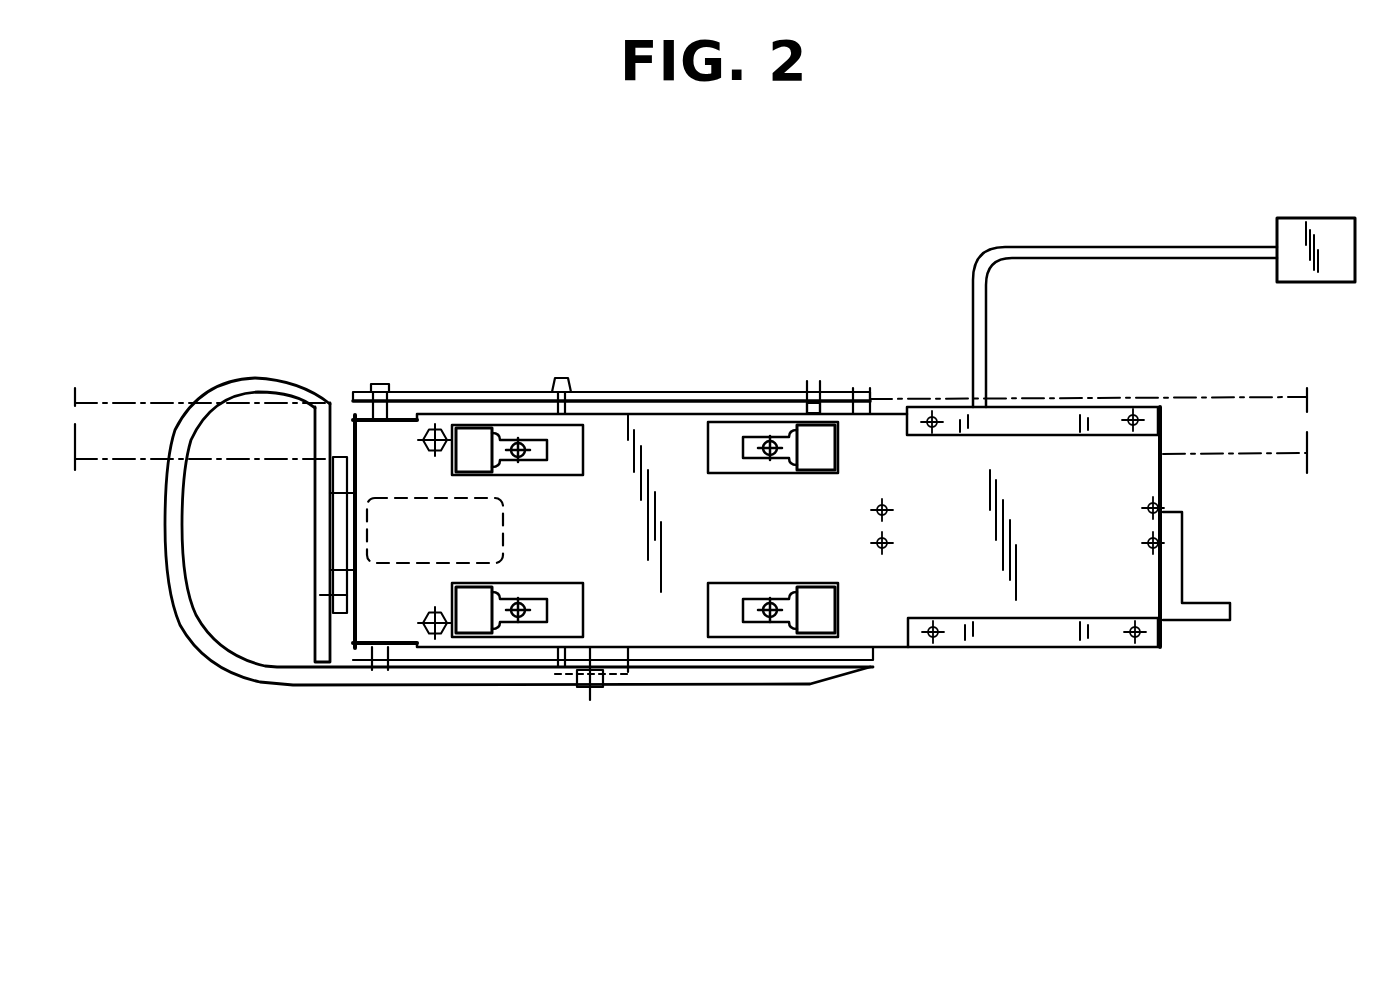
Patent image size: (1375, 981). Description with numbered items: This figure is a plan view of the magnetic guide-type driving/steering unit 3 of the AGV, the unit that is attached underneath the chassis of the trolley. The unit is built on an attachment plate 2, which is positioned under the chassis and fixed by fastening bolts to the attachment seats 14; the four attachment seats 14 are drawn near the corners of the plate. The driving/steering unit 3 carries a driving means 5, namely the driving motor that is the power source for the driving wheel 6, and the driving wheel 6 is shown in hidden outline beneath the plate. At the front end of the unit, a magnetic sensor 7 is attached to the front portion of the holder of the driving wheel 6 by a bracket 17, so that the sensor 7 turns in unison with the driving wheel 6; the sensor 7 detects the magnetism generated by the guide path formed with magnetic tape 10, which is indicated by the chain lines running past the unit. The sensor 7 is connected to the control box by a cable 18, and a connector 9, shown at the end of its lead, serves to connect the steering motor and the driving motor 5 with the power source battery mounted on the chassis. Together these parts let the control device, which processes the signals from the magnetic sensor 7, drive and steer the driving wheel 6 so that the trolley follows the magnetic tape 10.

The attachment plate 2 is at (791, 578).
The driving/steering unit 3 is at (715, 465).
The driving means 5 is at (613, 596).
The driving wheel 6 is at (435, 637).
The magnetic sensor 7 is at (283, 532).
The connector 9 is at (1164, 312).
The magnetic tape 10 is at (691, 483).
The attachment seats 14 is at (645, 541).
The bracket 17 is at (293, 535).
The cable 18 is at (519, 482).